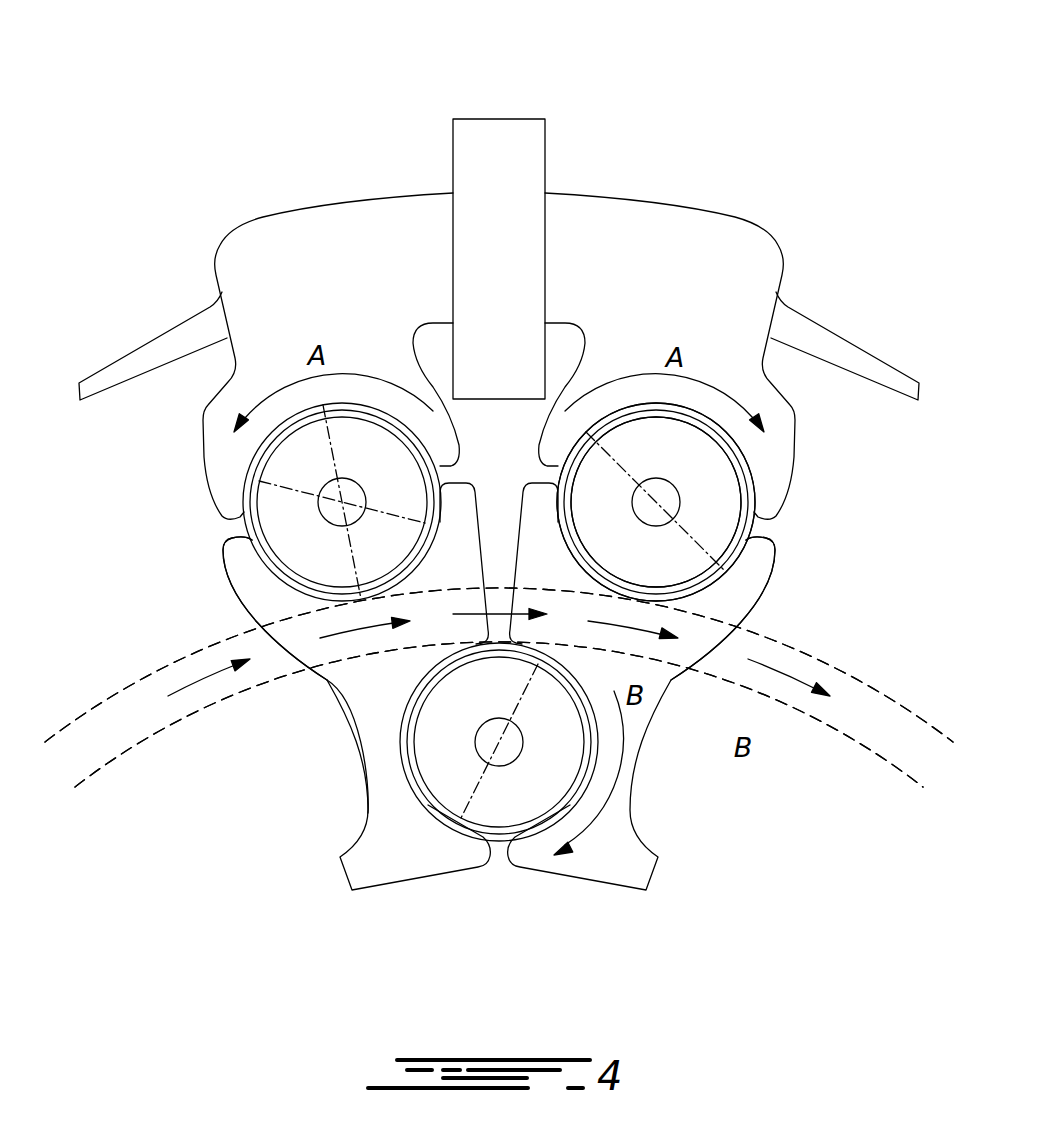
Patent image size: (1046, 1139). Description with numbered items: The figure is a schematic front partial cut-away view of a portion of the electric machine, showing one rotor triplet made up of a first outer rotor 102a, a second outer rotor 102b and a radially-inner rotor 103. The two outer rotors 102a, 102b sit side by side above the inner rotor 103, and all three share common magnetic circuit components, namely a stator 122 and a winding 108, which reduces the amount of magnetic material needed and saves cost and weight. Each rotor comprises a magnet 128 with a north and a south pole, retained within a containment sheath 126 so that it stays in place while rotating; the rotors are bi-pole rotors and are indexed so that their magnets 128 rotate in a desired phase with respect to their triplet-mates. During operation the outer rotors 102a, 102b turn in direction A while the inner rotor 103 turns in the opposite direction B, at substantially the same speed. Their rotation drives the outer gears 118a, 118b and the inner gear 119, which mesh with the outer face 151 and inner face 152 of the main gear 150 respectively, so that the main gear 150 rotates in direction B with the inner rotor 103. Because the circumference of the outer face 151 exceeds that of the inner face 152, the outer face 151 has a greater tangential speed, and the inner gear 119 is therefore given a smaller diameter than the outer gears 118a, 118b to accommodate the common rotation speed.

The winding 108 is at (496, 148).
The stator 122 is at (679, 240).
The first outer rotor 102a is at (290, 462).
The second outer rotor 102b is at (713, 517).
The inner rotor 103 is at (437, 762).
The containment sheath 126 is at (743, 450).
The magnet 128 is at (710, 490).
The outer gear 118a is at (280, 573).
The outer gear 118b is at (715, 582).
The inner gear 119 is at (413, 707).
The main gear 150 is at (862, 710).
The outer face 151 is at (108, 685).
The inner face 152 is at (185, 750).